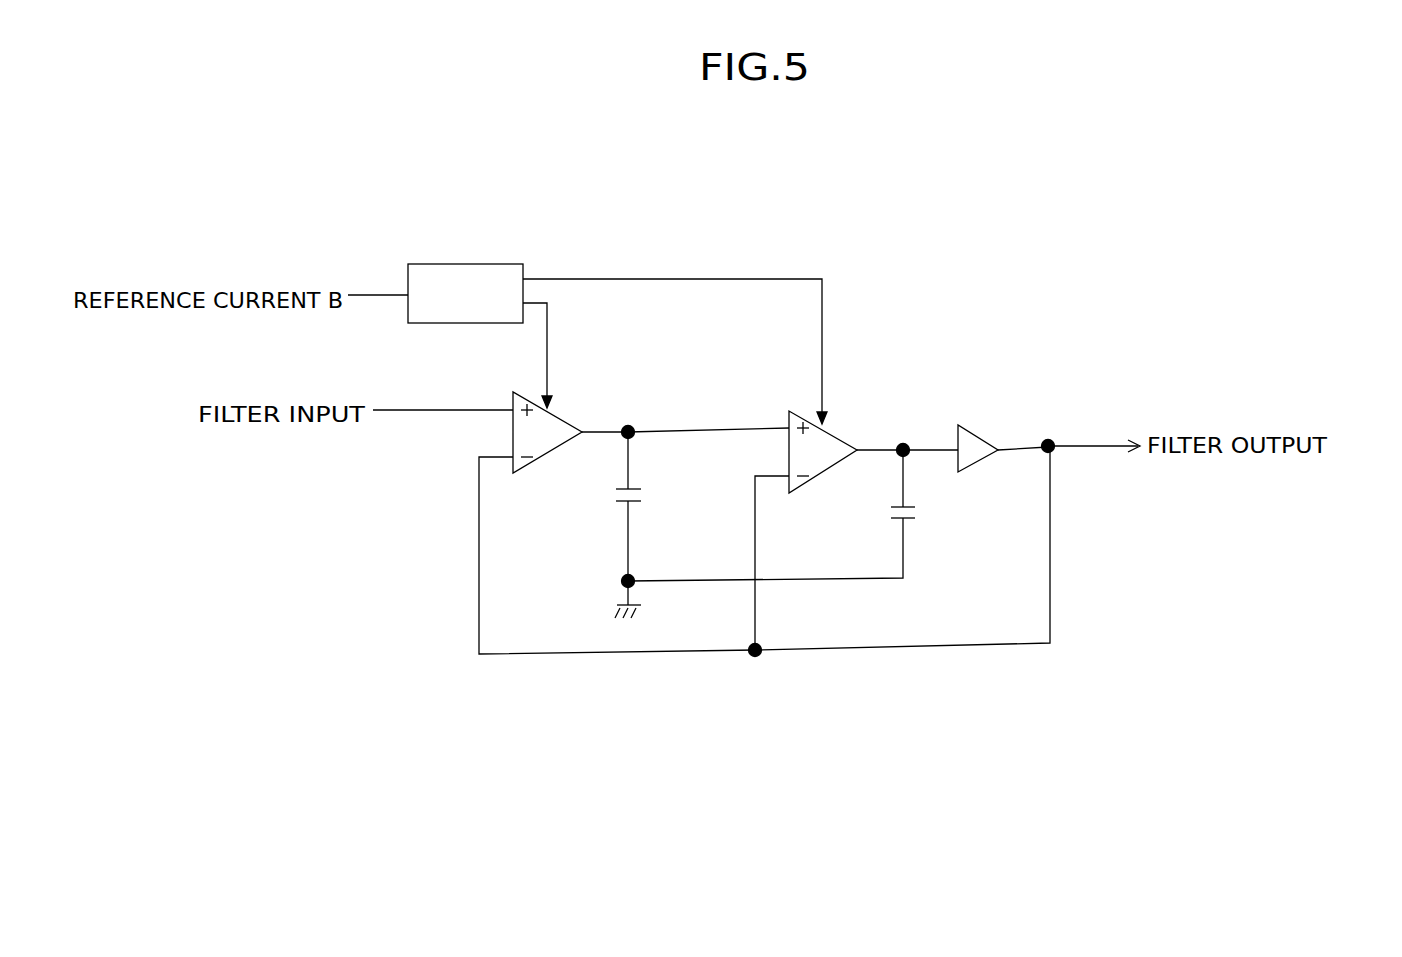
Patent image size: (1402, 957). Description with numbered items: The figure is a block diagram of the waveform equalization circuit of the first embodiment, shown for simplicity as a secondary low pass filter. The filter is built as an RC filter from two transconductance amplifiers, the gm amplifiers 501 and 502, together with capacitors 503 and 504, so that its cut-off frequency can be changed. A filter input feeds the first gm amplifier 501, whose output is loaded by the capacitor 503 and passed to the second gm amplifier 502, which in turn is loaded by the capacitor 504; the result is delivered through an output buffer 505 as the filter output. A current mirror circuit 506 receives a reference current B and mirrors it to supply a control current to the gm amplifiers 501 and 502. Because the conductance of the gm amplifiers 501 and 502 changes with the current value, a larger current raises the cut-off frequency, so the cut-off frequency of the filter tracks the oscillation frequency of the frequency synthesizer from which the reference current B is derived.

The transconductance amplifier 501 is at (619, 420).
The transconductance amplifier 502 is at (868, 440).
The capacitor 503 is at (650, 525).
The capacitor 504 is at (793, 515).
The output buffer 505 is at (1005, 424).
The current mirror circuit 506 is at (617, 330).